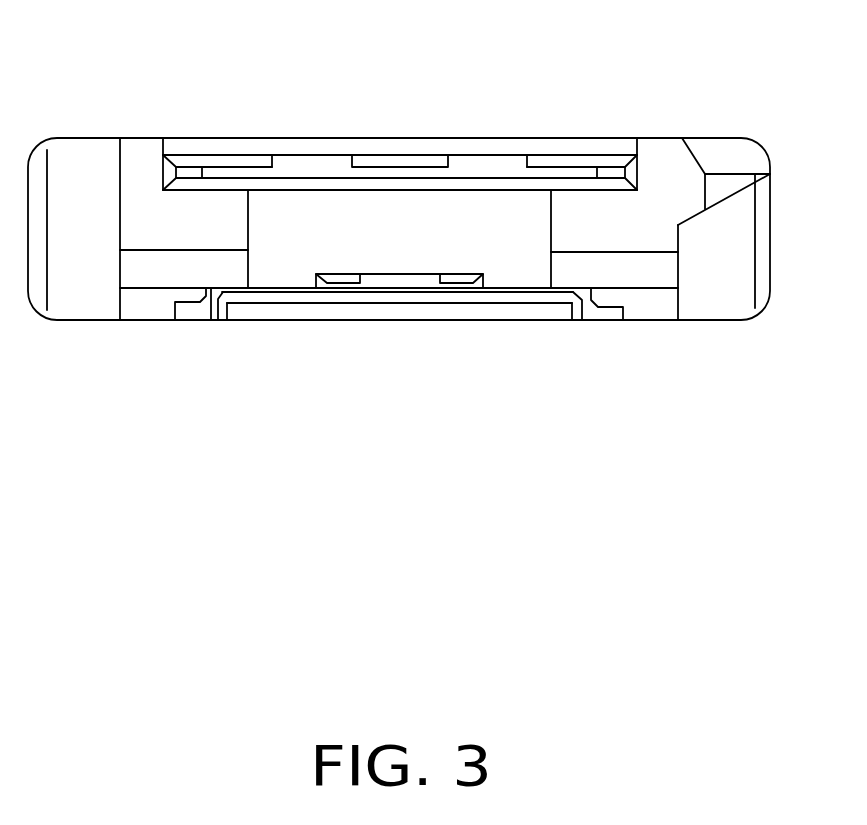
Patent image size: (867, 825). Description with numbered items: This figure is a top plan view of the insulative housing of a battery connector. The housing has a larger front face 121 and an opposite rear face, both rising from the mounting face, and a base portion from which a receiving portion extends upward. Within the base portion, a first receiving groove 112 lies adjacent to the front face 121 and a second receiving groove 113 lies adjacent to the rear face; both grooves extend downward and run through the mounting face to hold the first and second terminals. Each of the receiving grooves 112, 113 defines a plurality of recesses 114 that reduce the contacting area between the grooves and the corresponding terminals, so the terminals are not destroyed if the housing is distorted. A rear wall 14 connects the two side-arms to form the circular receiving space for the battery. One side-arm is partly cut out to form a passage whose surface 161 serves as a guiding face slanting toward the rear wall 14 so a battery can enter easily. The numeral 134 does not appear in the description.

The rear wall 14 is at (527, 312).
The first receiving groove 112 is at (405, 172).
The second receiving groove 113 is at (452, 285).
The recess 114 is at (300, 165).
The front face 121 is at (562, 138).
The hook 134 is at (590, 307).
The surface of the passage 161 is at (717, 203).